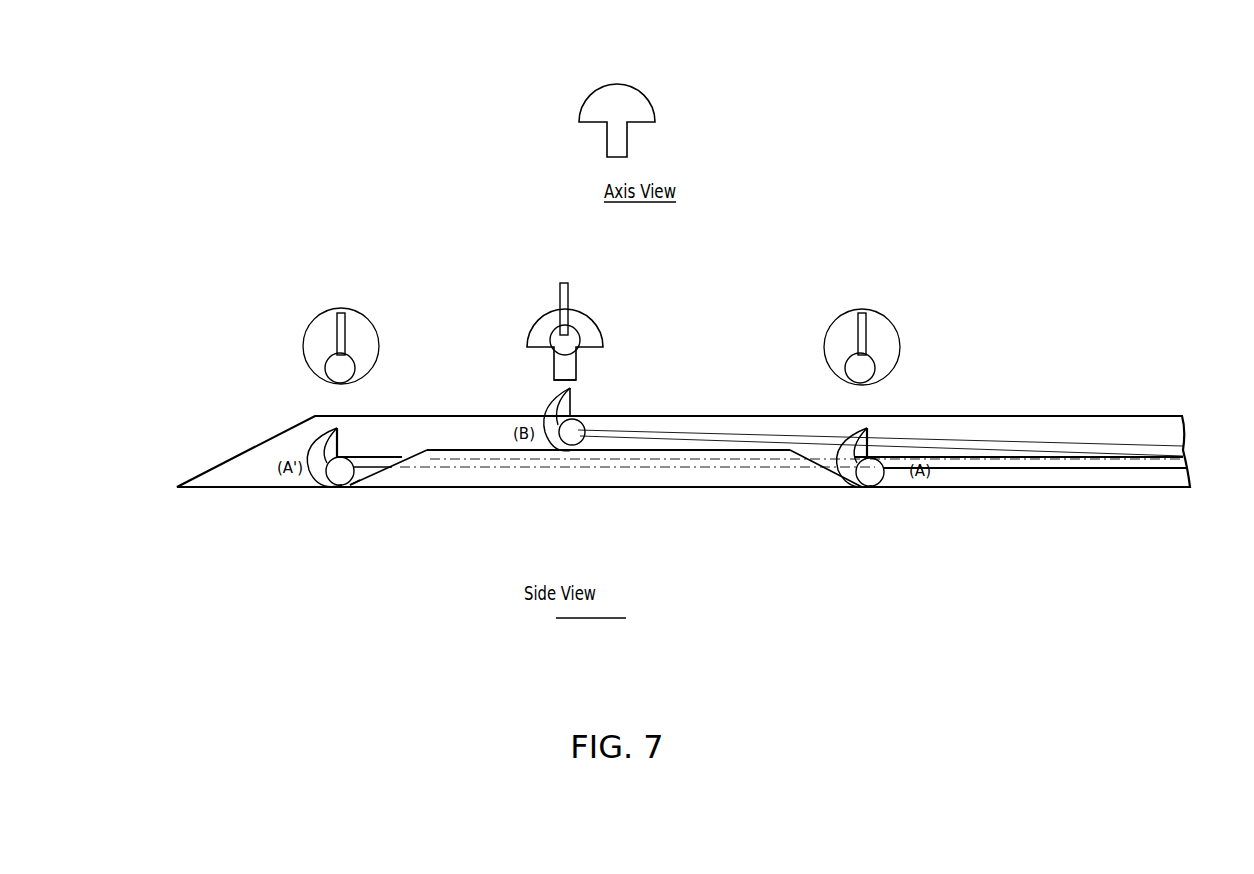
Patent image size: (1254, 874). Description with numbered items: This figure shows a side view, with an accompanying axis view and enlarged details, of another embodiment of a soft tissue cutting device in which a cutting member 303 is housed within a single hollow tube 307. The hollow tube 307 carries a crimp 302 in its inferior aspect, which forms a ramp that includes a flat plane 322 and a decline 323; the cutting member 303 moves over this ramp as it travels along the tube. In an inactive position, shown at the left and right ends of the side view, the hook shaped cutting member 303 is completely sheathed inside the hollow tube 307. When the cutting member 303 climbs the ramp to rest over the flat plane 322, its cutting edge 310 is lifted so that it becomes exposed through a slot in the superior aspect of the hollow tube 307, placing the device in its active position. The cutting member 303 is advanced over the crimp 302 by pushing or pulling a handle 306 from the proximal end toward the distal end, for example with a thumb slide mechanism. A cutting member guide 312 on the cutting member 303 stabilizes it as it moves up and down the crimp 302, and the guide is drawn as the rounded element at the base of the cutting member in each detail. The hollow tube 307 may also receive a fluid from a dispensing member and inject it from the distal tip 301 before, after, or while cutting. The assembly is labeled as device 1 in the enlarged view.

The anchor device 1 is at (578, 362).
The distal tip 301 is at (178, 489).
The crimp 302 is at (585, 123).
The cutting member 303 is at (342, 312).
The handle 306 is at (1043, 462).
The hollow tube 307 is at (635, 87).
The cutting edge 310 is at (342, 438).
The cutting member guide 312 is at (345, 366).
The flat plane 322 is at (668, 452).
The decline 323 is at (388, 478).